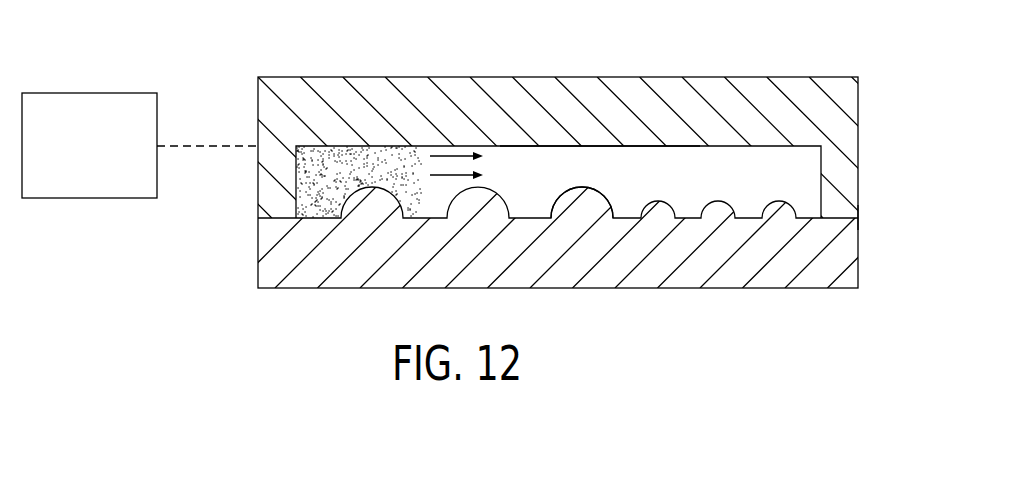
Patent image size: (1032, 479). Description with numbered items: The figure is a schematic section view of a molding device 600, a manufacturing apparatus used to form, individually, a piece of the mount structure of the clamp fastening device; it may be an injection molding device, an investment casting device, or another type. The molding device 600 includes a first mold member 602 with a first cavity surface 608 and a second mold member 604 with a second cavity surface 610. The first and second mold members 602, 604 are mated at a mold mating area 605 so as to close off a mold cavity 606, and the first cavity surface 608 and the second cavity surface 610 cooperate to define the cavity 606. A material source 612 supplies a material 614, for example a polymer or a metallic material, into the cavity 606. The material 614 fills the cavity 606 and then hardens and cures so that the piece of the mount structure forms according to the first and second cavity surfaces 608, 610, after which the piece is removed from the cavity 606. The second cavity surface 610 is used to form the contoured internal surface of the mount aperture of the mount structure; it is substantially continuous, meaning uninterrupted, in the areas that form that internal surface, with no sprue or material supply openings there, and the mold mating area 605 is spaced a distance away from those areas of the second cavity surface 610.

The molding device 600 is at (357, 58).
The first mold member 602 is at (833, 122).
The second mold member 604 is at (833, 258).
The mold mating area 605 is at (872, 211).
The mold cavity 606 is at (640, 160).
The first cavity surface 608 is at (560, 147).
The second cavity surface 610 is at (592, 190).
The material source 612 is at (88, 198).
The material 614 is at (325, 182).